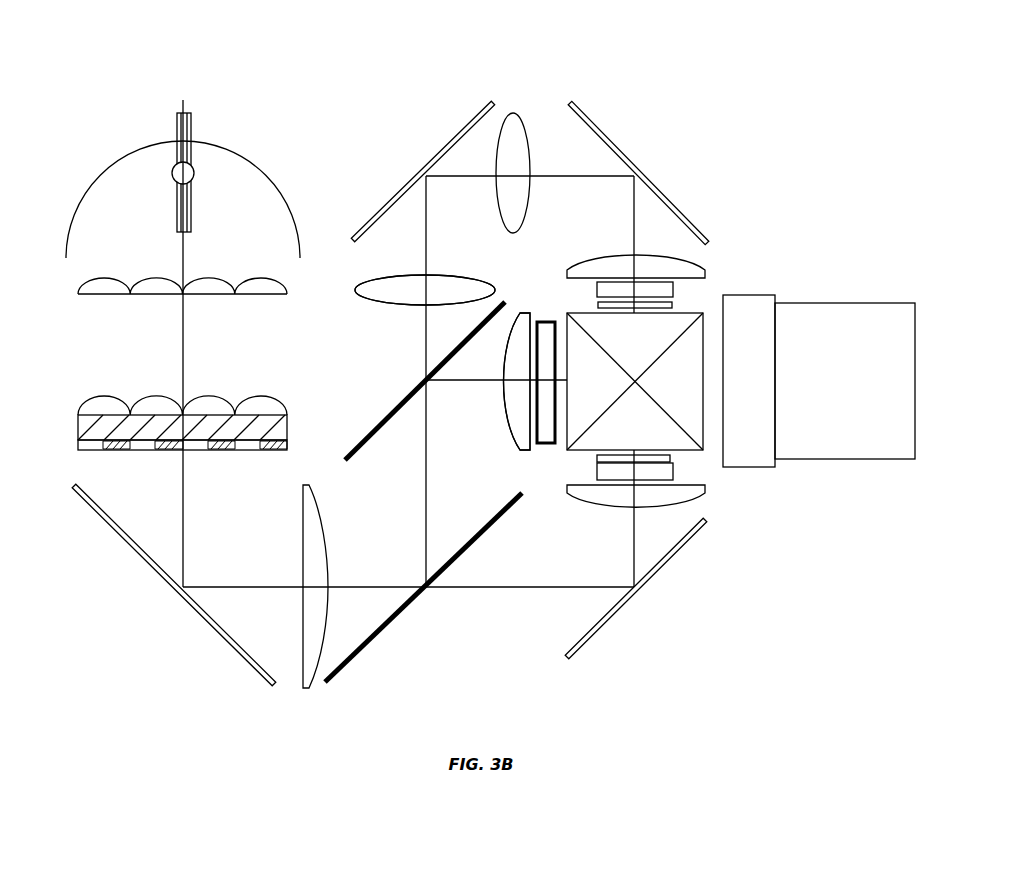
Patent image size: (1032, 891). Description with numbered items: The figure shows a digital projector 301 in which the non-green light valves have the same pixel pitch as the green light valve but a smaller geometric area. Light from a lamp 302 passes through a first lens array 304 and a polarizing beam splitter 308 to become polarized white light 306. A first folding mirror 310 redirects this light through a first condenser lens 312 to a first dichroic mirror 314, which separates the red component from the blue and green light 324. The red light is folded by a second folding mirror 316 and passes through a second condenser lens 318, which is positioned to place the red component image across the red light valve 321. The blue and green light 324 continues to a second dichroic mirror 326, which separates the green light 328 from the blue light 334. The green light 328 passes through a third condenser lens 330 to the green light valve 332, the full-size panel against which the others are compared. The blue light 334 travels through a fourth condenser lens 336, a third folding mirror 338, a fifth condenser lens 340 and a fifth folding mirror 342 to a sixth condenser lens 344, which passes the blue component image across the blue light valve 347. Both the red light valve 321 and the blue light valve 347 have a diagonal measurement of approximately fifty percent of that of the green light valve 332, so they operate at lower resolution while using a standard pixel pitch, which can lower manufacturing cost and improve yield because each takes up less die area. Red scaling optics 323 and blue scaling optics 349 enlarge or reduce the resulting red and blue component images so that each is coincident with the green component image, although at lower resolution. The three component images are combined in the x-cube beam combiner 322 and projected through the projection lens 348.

The digital projector 301 is at (327, 65).
The lamp 302 is at (163, 170).
The first lens array 304 is at (137, 295).
The polarized white light 306 is at (183, 486).
The polarizing beam splitter 308 is at (97, 450).
The first folding mirror 310 is at (140, 553).
The first condenser lens 312 is at (293, 604).
The first dichroic mirror 314 is at (393, 618).
The second folding mirror 316 is at (670, 562).
The second condenser lens 318 is at (572, 493).
The red light valve 321 is at (673, 468).
The x-cube beam combiner 322 is at (687, 418).
The red scaling optics 323 is at (592, 455).
The blue and green light 324 is at (426, 474).
The second dichroic mirror 326 is at (390, 413).
The green light 328 is at (503, 400).
The third condenser lens 330 is at (521, 433).
The green light valve 332 is at (548, 322).
The blue light 334 is at (424, 315).
The fourth condenser lens 336 is at (477, 283).
The third folding mirror 338 is at (428, 163).
The fifth condenser lens 340 is at (515, 219).
The fifth folding mirror 342 is at (627, 155).
The sixth condenser lens 344 is at (583, 270).
The blue light valve 347 is at (677, 287).
The projection lens 348 is at (837, 459).
The blue scaling optics 349 is at (673, 305).